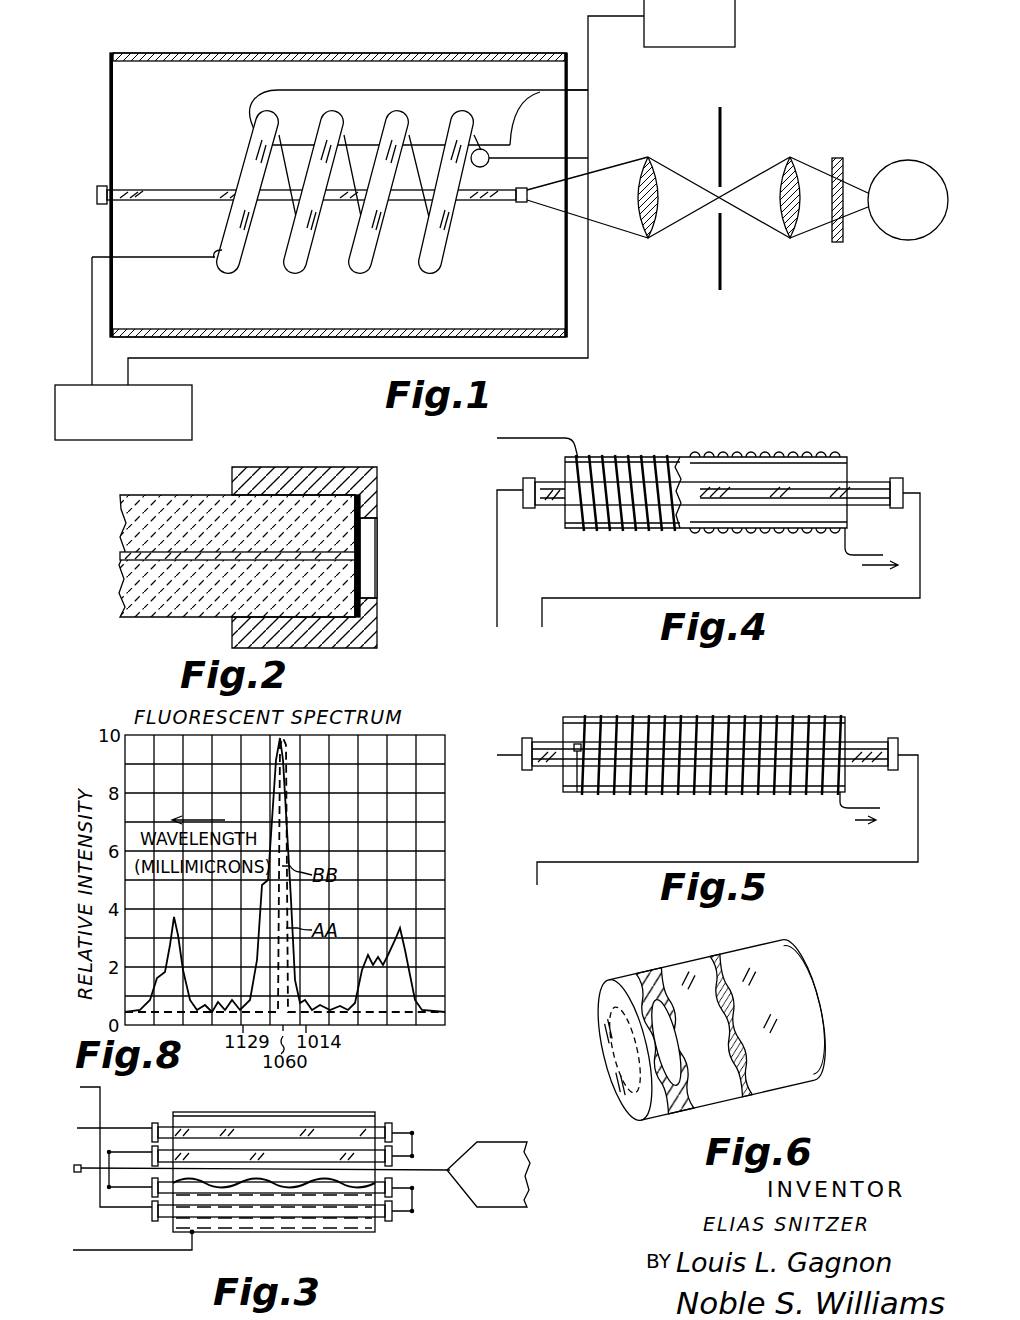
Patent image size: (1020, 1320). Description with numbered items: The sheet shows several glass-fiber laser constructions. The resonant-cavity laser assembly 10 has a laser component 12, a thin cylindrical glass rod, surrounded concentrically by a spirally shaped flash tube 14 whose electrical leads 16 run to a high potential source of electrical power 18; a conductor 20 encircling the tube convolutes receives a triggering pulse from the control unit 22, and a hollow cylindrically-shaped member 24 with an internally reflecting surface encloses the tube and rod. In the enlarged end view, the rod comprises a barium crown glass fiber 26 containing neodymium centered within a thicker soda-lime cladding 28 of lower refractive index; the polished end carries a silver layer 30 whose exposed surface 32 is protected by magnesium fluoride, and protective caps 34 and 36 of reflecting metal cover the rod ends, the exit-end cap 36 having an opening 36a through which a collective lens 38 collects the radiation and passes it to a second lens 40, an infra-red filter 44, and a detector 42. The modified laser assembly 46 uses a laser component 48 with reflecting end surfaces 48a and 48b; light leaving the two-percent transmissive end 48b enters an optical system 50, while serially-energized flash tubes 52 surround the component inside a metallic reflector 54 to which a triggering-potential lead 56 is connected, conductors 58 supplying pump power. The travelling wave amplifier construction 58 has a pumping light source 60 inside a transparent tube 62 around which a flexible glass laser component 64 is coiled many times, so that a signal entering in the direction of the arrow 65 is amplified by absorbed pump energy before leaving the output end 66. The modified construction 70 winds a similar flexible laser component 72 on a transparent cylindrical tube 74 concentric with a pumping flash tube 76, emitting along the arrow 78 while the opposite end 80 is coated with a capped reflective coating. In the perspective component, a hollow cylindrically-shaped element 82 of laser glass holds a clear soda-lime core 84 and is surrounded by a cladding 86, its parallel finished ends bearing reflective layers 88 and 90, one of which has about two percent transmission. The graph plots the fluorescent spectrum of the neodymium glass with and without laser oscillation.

In FIG. 1, the laser assembly 10 is at (107, 140).
In FIG. 1, the laser component 12 is at (215, 190).
In FIG. 2, the laser component 12 is at (137, 495).
In FIG. 1, the flash tube 14 is at (226, 240).
In FIG. 1, the electrical leads 16 is at (128, 354).
In FIG. 1, the source of electrical power 18 is at (192, 410).
In FIG. 1, the conductor 20 is at (514, 118).
In FIG. 1, the control unit 22 is at (735, 5).
In FIG. 1, the hollow cylindrically-shaped member 24 is at (464, 332).
In FIG. 2, the fiber 26 is at (126, 557).
In FIG. 2, the cladding 28 is at (122, 534).
In FIG. 2, the silver layer 30 is at (356, 495).
In FIG. 2, the surface 32 is at (377, 532).
In FIG. 1, the protective cap 34 is at (97, 196).
In FIG. 1, the exit-end cap 36 is at (523, 188).
In FIG. 2, the exit-end cap 36 is at (252, 472).
In FIG. 2, the opening 36a is at (376, 578).
In FIG. 1, the collective lens 38 is at (656, 166).
In FIG. 1, the second lens 40 is at (782, 171).
In FIG. 1, the detector 42 is at (910, 160).
In FIG. 1, the infra-red filter 44 is at (838, 158).
In FIG. 3, the laser assembly 46 is at (287, 1169).
In FIG. 3, the laser component 48 is at (84, 1172).
In FIG. 3, the reflecting end surface 48a is at (78, 1166).
In FIG. 3, the reflecting end surface 48b is at (454, 1158).
In FIG. 3, the optical system 50 is at (506, 1148).
In FIG. 3, the flash tubes 52 is at (166, 1216).
In FIG. 3, the metallic reflector 54 is at (349, 1112).
In FIG. 3, the triggering-potential lead 56 is at (204, 1250).
In FIG. 4, the conductors 58 is at (708, 509).
In FIG. 3, the conductors 58 is at (80, 1088).
In FIG. 4, the pumping light source 60 is at (548, 500).
In FIG. 4, the transparent tube 62 is at (582, 513).
In FIG. 4, the flexible glass laser component 64 is at (574, 438).
In FIG. 4, the arrow 65 is at (512, 429).
In FIG. 4, the output end 66 is at (872, 554).
In FIG. 5, the modified construction 70 is at (711, 777).
In FIG. 5, the flexible laser component 72 is at (612, 718).
In FIG. 5, the transparent cylindrical tube 74 is at (840, 732).
In FIG. 5, the pumping flash tube 76 is at (870, 750).
In FIG. 5, the arrow 78 is at (857, 820).
In FIG. 5, the opposite end of fiber 80 is at (574, 749).
In FIG. 6, the hollow cylindrically-shaped element 82 is at (648, 1115).
In FIG. 6, the core 84 is at (625, 1090).
In FIG. 6, the cladding 86 is at (672, 1118).
In FIG. 6, the reflective layer 88 is at (604, 1000).
In FIG. 6, the reflective layer 90 is at (804, 970).